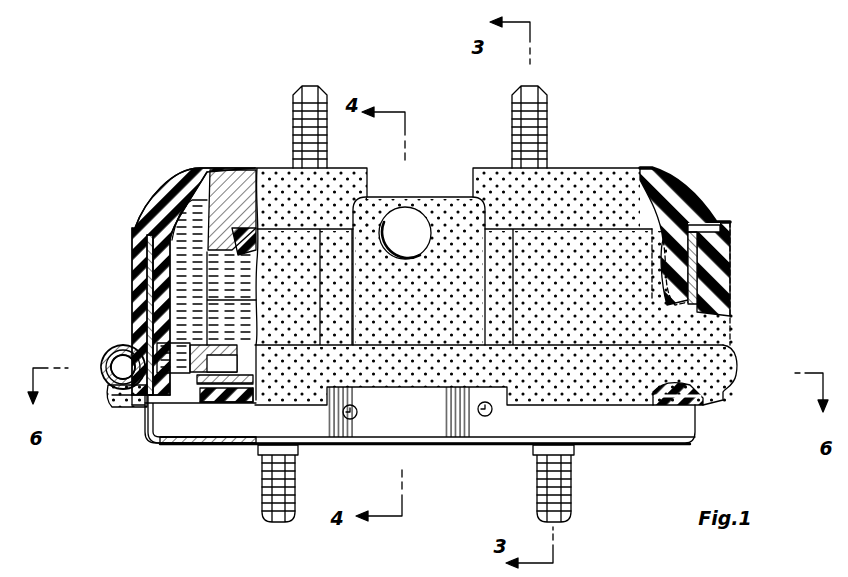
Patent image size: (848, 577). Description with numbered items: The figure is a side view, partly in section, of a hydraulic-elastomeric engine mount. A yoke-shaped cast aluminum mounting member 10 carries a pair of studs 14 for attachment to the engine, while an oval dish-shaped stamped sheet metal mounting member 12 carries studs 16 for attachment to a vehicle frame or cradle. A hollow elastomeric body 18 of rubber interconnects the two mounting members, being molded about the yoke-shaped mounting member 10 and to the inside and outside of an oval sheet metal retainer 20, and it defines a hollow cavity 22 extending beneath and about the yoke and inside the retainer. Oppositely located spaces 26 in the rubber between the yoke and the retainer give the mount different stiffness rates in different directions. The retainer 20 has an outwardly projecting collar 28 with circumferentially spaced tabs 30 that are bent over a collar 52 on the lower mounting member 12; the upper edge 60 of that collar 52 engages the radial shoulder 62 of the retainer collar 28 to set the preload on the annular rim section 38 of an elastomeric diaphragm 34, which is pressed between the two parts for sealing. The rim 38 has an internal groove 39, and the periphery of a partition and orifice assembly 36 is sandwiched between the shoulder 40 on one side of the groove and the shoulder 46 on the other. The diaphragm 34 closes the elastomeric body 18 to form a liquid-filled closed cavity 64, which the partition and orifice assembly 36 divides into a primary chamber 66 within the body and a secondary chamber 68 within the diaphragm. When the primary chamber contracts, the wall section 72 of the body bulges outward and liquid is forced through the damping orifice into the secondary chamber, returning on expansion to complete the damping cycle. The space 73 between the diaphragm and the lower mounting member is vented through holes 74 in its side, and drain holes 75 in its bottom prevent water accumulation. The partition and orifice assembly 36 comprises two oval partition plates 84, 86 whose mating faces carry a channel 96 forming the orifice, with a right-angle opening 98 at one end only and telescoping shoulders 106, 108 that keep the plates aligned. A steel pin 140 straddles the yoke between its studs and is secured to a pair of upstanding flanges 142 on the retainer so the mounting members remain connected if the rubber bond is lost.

The mounting member 10 is at (257, 165).
The mounting member 12 is at (640, 444).
The studs 14 is at (310, 90).
The studs 16 is at (270, 500).
The elastomeric body 18 is at (193, 170).
The retainer 20 is at (136, 240).
The hollow cavity 22 is at (135, 279).
The spaces 26 is at (218, 195).
The collar 28 is at (100, 358).
The tabs 30 is at (705, 405).
The elastomeric diaphragm 34 is at (258, 414).
The partition and orifice assembly 36 is at (234, 334).
The annular rim section 38 is at (120, 398).
The internal groove 39 is at (180, 344).
The shoulder 40 is at (150, 342).
The shoulder 46 is at (132, 398).
The collar 52 is at (108, 378).
The upper edge 60 is at (113, 360).
The radial shoulder 62 is at (118, 352).
The closed cavity 64 is at (183, 230).
The primary chamber 66 is at (183, 262).
The secondary chamber 68 is at (256, 394).
The wall section 72 is at (198, 190).
The space 73 is at (175, 442).
The holes 74 is at (482, 407).
The drain holes 75 is at (180, 446).
The partition plate 84 is at (252, 346).
The partition plate 86 is at (258, 384).
The channel 96 is at (200, 420).
The right-angle opening 98 is at (194, 346).
The telescoping shoulder 106 is at (252, 378).
The telescoping shoulder 108 is at (203, 402).
The steel pin 140 is at (407, 222).
The upstanding flanges 142 is at (445, 197).